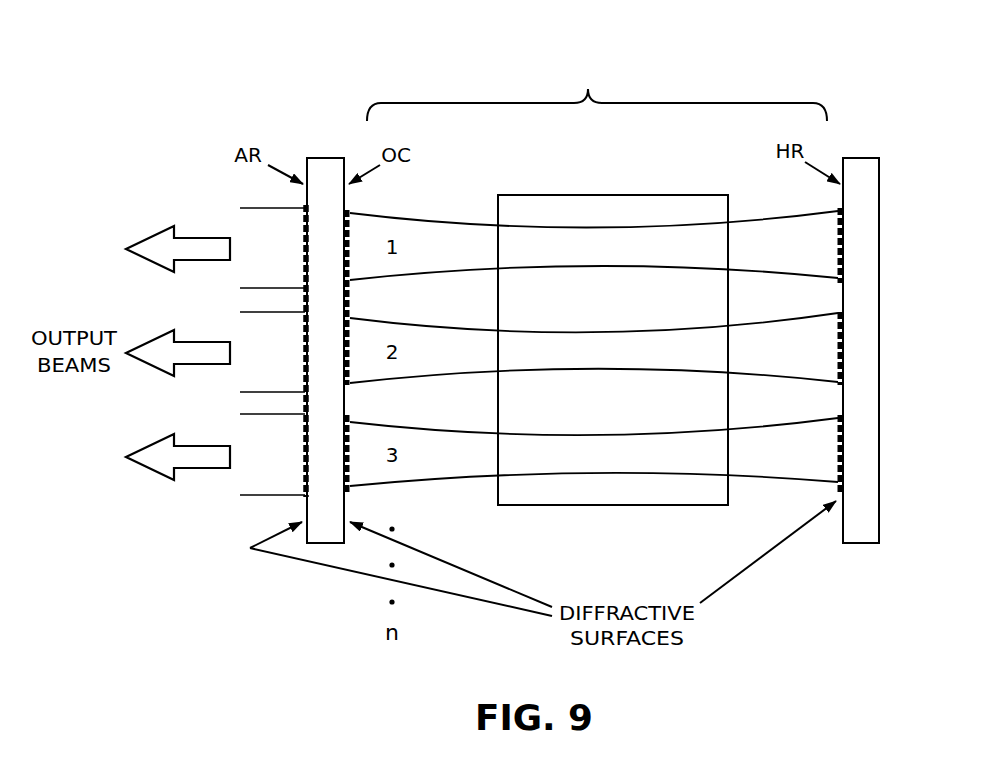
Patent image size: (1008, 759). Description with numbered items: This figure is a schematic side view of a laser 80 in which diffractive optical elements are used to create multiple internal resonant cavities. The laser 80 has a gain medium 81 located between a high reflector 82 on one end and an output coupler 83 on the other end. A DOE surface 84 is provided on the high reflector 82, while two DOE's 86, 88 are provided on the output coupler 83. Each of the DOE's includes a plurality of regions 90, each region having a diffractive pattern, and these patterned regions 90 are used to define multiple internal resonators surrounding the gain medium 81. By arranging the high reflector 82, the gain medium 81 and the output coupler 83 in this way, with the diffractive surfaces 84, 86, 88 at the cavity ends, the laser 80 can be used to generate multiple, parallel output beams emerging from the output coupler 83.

The laser 80 is at (795, 92).
The gain medium 81 is at (592, 505).
The high reflector 82 is at (860, 543).
The output coupler 83 is at (327, 543).
The DOE surface 84 is at (838, 497).
The DOE 86 is at (349, 510).
The DOE 88 is at (307, 508).
The regions 90 is at (303, 426).